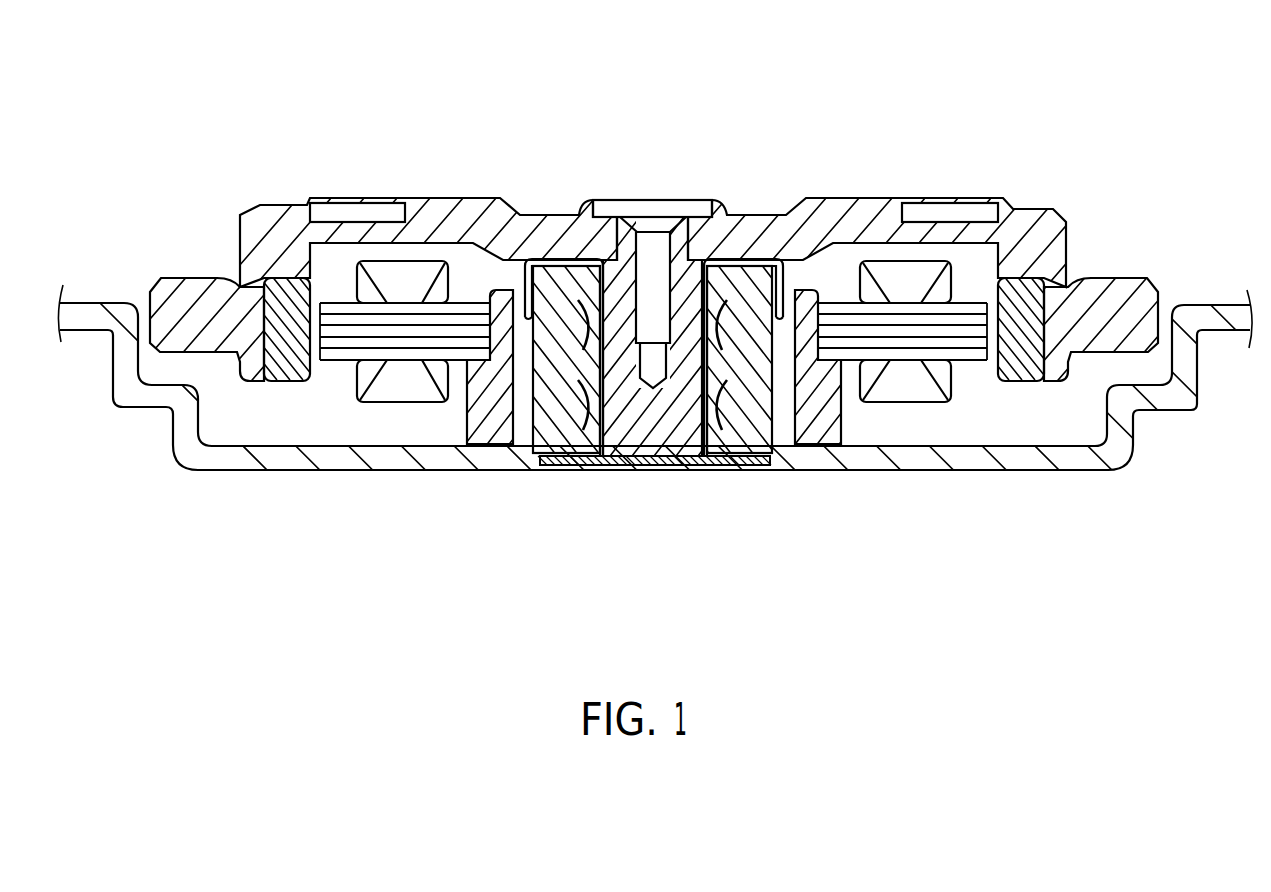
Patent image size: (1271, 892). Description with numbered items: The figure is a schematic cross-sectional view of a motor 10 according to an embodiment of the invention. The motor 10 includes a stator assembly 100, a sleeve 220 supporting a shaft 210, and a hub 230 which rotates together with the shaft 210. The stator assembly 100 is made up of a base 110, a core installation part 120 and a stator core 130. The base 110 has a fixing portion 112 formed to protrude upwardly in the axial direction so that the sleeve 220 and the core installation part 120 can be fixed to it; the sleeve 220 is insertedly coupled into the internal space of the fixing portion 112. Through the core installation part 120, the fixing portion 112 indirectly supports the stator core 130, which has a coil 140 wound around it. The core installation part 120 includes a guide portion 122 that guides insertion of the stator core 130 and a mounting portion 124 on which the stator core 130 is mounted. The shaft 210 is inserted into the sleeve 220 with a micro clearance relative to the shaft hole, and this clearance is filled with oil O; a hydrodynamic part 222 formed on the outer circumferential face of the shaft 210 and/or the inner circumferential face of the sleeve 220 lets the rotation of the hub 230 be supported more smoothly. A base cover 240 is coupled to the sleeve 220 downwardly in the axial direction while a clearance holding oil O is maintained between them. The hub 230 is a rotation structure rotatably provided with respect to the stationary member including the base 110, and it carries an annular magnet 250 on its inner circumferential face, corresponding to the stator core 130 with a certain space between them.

The motor 10 is at (669, 57).
The stator assembly 100 is at (866, 533).
The base 110 is at (920, 458).
The fixing portion 112 is at (779, 440).
The core installation part 120 is at (930, 142).
The guide portion 122 is at (829, 378).
The mounting portion 124 is at (860, 298).
The stator core 130 is at (933, 345).
The coil 140 is at (913, 388).
The shaft 210 is at (662, 436).
The sleeve 220 is at (567, 442).
The hydrodynamic part 222 is at (717, 262).
The hub 230 is at (1043, 222).
The base cover 240 is at (740, 440).
The annular magnet 250 is at (1066, 292).
The oil O is at (598, 466).